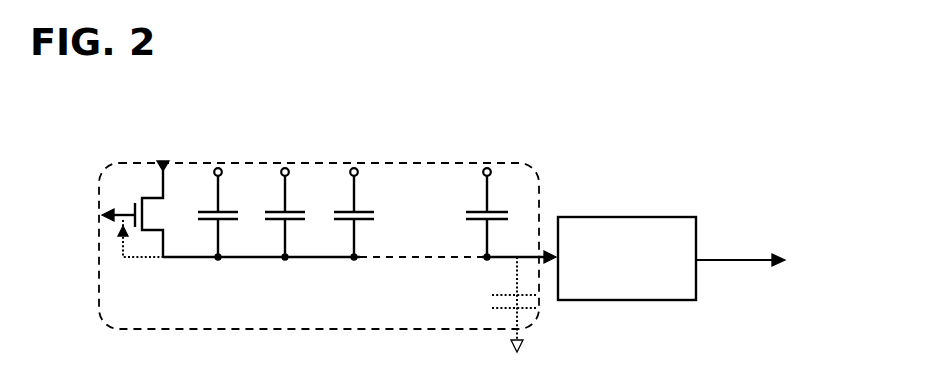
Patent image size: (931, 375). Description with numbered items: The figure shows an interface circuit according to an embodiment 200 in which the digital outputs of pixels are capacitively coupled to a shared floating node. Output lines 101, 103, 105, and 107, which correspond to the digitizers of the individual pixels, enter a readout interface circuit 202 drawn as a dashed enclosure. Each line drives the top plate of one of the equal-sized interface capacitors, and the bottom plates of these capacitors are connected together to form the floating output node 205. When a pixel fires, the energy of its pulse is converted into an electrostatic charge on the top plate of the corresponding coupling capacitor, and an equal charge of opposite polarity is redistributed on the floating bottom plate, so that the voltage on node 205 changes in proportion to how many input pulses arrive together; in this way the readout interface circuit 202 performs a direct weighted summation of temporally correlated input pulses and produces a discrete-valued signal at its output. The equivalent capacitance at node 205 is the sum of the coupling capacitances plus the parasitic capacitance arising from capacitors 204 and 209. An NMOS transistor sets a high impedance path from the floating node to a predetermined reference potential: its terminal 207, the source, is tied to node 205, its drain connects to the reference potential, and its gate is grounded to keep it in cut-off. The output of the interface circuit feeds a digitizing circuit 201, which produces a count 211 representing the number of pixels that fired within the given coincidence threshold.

The embodiment 200 is at (67, 110).
The readout interface circuit 202 is at (100, 162).
The output line 101 is at (220, 168).
The output line 103 is at (288, 168).
The output line 105 is at (357, 168).
The output line 107 is at (489, 168).
The digitizing circuit 201 is at (627, 258).
The capacitor 204 is at (492, 310).
The floating output node 205 is at (284, 259).
The terminal of transistor M1 207 is at (160, 258).
The capacitor 209 is at (116, 240).
The count 211 is at (784, 258).